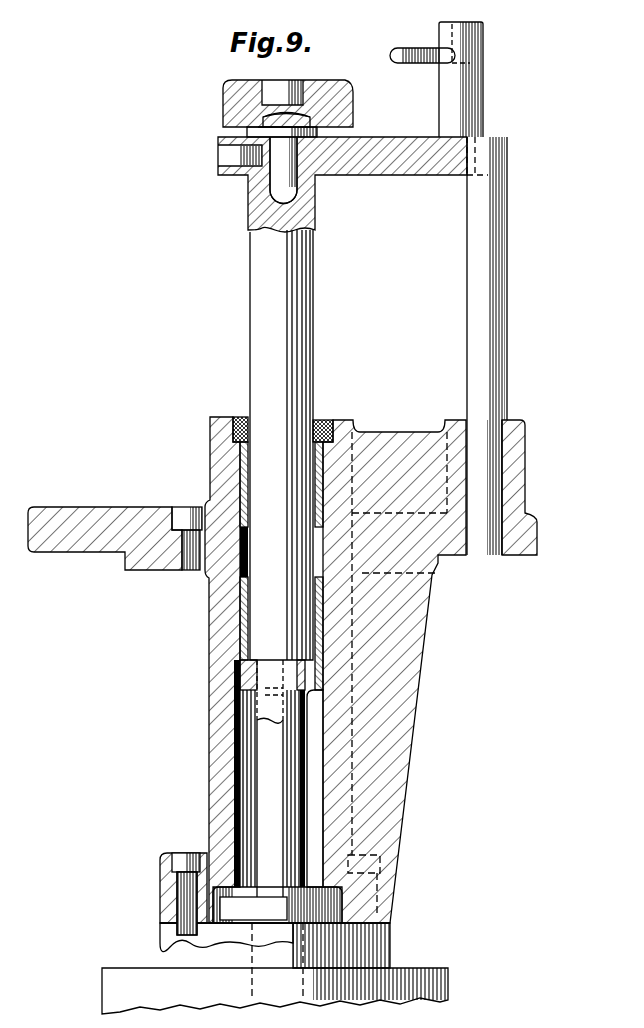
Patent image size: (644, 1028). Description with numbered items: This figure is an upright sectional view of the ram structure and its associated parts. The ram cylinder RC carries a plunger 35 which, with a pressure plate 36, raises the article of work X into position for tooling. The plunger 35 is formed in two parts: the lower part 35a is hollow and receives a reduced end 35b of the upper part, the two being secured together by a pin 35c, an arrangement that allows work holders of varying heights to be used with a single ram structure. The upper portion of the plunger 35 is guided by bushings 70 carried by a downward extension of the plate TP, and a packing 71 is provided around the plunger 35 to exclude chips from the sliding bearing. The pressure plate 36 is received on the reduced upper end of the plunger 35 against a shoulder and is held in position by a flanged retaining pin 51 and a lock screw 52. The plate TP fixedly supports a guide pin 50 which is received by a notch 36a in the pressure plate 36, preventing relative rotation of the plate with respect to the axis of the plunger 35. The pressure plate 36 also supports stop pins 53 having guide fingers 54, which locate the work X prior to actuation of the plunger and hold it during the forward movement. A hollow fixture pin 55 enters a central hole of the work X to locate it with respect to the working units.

The article of work X is at (232, 96).
The hollow fixture pin 55 is at (286, 88).
The lock screw 52 is at (222, 152).
The flanged retaining pin 51 is at (277, 172).
The pressure plate 36 is at (400, 170).
The notch 36a is at (458, 176).
The guide fingers 54 is at (411, 37).
The stop pins 53 is at (483, 103).
The plunger 35 is at (316, 293).
The guide pin 50 is at (504, 364).
The packing 71 is at (318, 420).
The bushings 70 is at (247, 472).
The bottom plate TP is at (525, 467).
The pin 35c is at (255, 692).
The reduced end of the upper part 35b is at (270, 703).
The lower part of plunger 35a is at (263, 768).
The ram cylinder RC is at (413, 967).